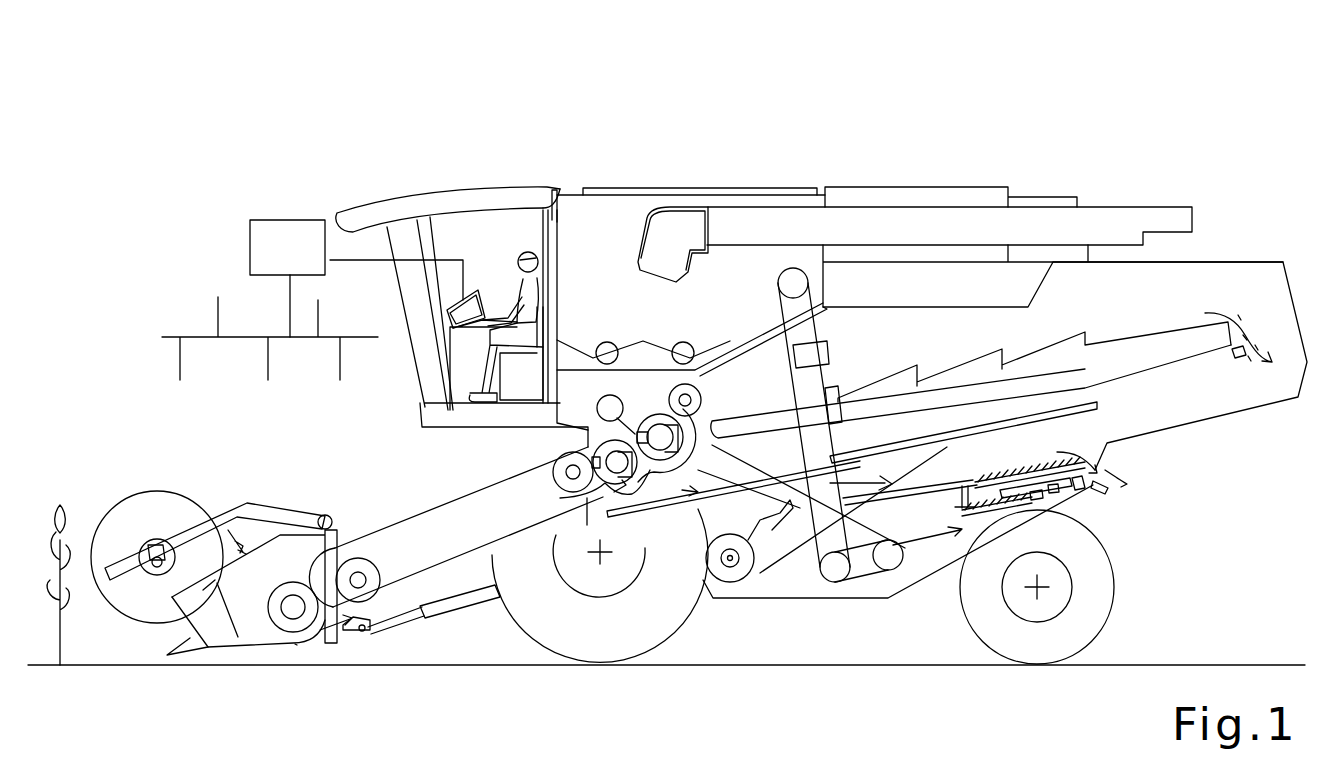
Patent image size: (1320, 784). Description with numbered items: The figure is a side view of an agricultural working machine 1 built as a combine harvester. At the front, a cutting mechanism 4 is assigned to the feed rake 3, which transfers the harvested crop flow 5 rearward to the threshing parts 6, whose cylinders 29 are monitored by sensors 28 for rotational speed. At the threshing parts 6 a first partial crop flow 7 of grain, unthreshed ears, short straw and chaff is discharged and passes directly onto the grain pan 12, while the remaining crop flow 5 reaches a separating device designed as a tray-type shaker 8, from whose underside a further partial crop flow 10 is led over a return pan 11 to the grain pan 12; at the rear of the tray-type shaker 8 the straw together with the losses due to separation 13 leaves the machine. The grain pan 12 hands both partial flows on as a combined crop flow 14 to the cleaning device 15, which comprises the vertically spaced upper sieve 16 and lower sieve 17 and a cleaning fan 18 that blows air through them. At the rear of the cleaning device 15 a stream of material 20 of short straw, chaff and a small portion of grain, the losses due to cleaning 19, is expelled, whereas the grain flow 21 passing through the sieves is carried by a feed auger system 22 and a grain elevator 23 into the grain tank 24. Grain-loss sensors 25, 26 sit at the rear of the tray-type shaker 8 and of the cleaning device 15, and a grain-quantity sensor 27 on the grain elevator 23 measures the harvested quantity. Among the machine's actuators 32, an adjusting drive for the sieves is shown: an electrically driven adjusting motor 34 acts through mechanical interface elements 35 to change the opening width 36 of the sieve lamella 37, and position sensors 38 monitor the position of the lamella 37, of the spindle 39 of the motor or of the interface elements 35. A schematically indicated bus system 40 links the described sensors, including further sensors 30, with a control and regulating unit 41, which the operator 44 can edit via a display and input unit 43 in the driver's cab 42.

The agricultural working machine 1 is at (200, 235).
The feed rake 3 is at (420, 510).
The cutting mechanism 4 is at (250, 478).
The crop flow 5 is at (297, 645).
The threshing parts 6 is at (660, 500).
The first partial crop flow 7 is at (680, 490).
The tray-type shaker 8 is at (1112, 350).
The further partial crop flow 10 is at (952, 390).
The return pan 11 is at (1030, 410).
The grain pan 12 is at (800, 500).
The losses due to separation 13 is at (1265, 380).
The combined crop flow 14 is at (822, 500).
The cleaning device 15 is at (935, 610).
The upper sieve 16 is at (1035, 480).
The lower sieve 17 is at (863, 555).
The cleaning fan 18 is at (730, 570).
The losses due to cleaning 19 is at (1114, 506).
The stream of material 20 is at (1094, 462).
The grain flow 21 is at (925, 532).
The feed auger system 22 is at (830, 575).
The grain elevator 23 is at (786, 302).
The grain tank 24 is at (920, 281).
The grain-loss sensor 25 is at (1240, 356).
The grain-loss sensor 26 is at (1108, 493).
The grain-quantity sensor 27 is at (825, 350).
The sensors 28 is at (655, 428).
The cylinders 29 is at (640, 425).
The sensors 30 is at (682, 422).
The actuators 32 is at (1093, 498).
The adjusting motor 34 is at (1062, 495).
The mechanical interface elements 35 is at (967, 492).
The opening width 36 is at (1010, 470).
The sieve lamella 37 is at (978, 480).
The position sensors 38 is at (1052, 492).
The spindle 39 is at (1030, 498).
The bus system 40 is at (196, 337).
The control and regulating unit 41 is at (287, 278).
The driver's cab 42 is at (411, 208).
The display and input unit 43 is at (473, 290).
The operator 44 is at (512, 290).